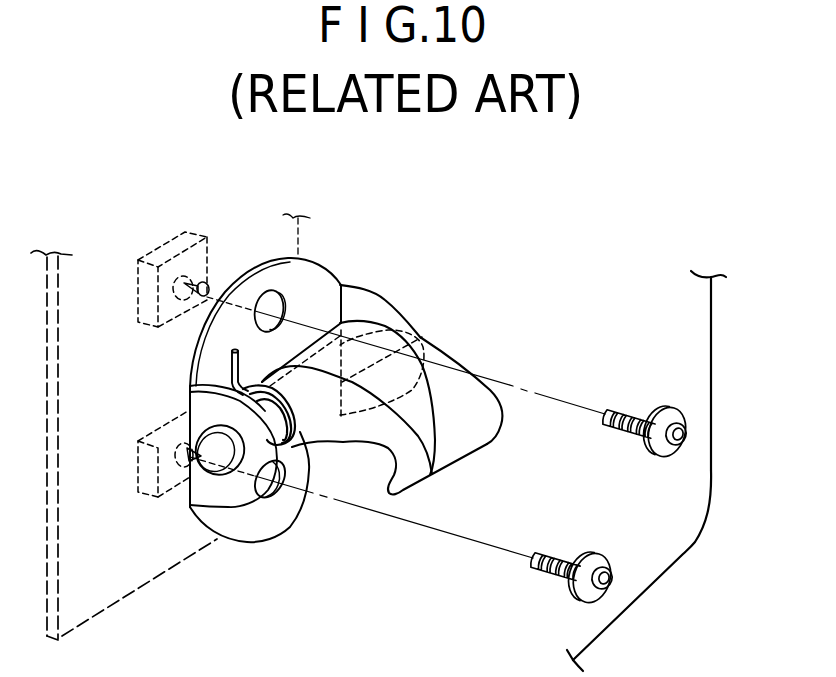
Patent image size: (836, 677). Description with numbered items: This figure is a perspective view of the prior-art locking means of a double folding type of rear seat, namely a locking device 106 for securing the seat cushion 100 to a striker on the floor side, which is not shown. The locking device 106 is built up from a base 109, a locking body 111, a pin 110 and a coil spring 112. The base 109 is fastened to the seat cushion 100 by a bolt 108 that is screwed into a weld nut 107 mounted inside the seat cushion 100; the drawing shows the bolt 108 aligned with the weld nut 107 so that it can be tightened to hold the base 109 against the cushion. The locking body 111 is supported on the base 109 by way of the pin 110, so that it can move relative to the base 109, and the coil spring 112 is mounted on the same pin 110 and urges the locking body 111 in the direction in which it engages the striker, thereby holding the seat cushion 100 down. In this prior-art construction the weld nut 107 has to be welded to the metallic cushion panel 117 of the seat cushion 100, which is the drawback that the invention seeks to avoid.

The seat cushion 100 is at (711, 347).
The locking device 106 is at (408, 397).
The weld nut 107 is at (162, 258).
The bolt 108 is at (612, 573).
The base 109 is at (310, 280).
The pin 110 is at (378, 331).
The locking body 111 is at (460, 440).
The coil spring 112 is at (303, 497).
The metallic cushion panel 117 is at (615, 313).